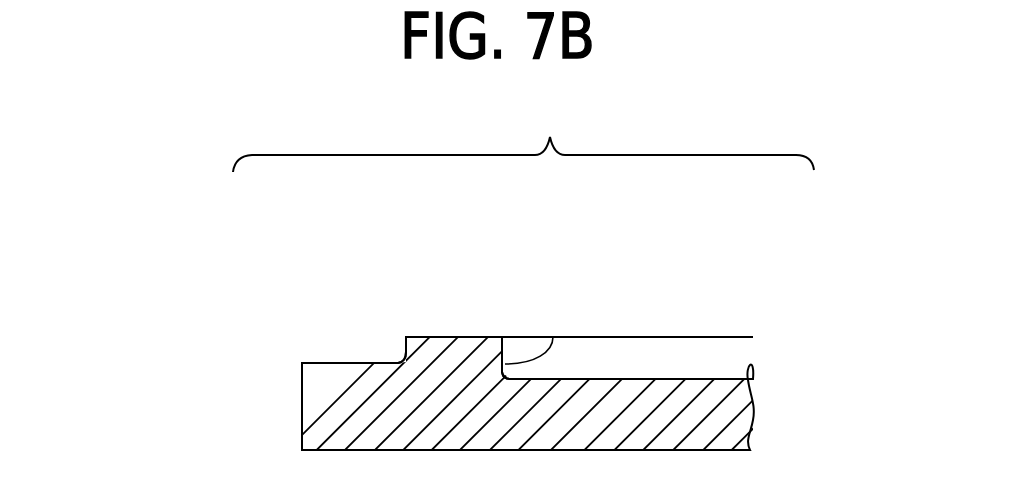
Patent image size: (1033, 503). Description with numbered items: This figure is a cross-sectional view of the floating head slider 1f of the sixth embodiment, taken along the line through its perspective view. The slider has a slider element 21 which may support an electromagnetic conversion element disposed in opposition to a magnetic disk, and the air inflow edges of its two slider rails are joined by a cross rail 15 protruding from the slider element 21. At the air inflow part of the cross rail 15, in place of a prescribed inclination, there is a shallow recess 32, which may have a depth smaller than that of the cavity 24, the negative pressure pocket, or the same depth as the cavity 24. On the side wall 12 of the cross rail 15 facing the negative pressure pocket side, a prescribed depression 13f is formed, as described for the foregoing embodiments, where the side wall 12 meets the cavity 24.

The floating head slider 1f is at (568, 131).
The side wall 12 is at (506, 340).
The shallow recess 32 is at (352, 362).
The cross rail 15 is at (453, 337).
The depression 13f is at (553, 337).
The slider element 21 is at (667, 377).
The cavity 24 is at (730, 379).